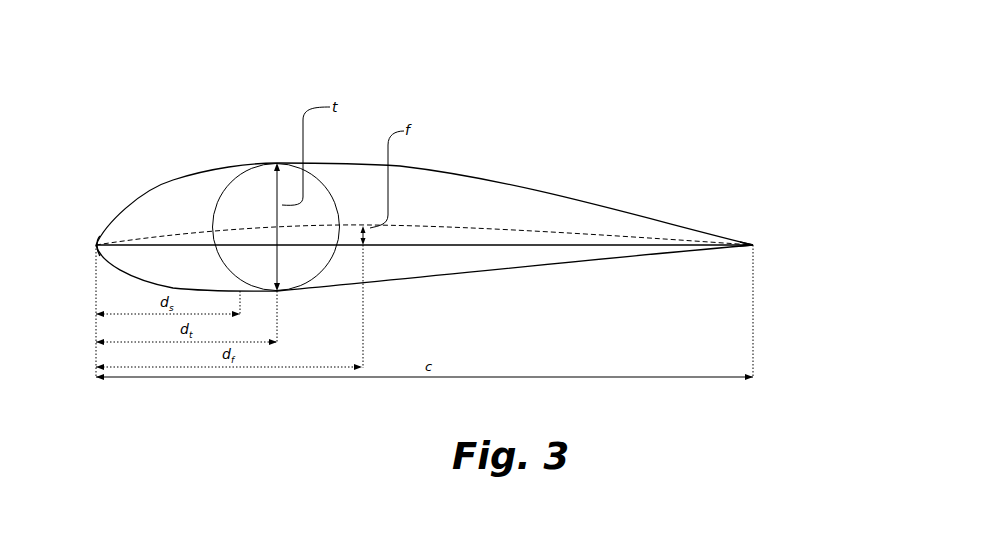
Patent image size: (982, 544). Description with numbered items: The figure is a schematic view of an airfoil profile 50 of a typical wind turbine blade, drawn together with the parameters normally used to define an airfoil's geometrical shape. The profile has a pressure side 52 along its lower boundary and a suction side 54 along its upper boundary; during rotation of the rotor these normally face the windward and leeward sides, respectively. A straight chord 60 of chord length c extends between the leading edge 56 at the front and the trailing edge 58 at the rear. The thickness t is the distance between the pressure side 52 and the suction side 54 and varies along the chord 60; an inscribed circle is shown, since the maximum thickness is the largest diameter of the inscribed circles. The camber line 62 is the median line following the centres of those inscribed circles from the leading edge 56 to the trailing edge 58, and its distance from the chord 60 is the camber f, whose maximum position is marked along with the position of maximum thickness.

The airfoil profile 50 is at (411, 184).
The pressure side 52 is at (554, 265).
The suction side 54 is at (507, 172).
The leading edge 56 is at (96, 245).
The trailing edge 58 is at (753, 243).
The chord 60 is at (588, 243).
The camber line 62 is at (420, 223).